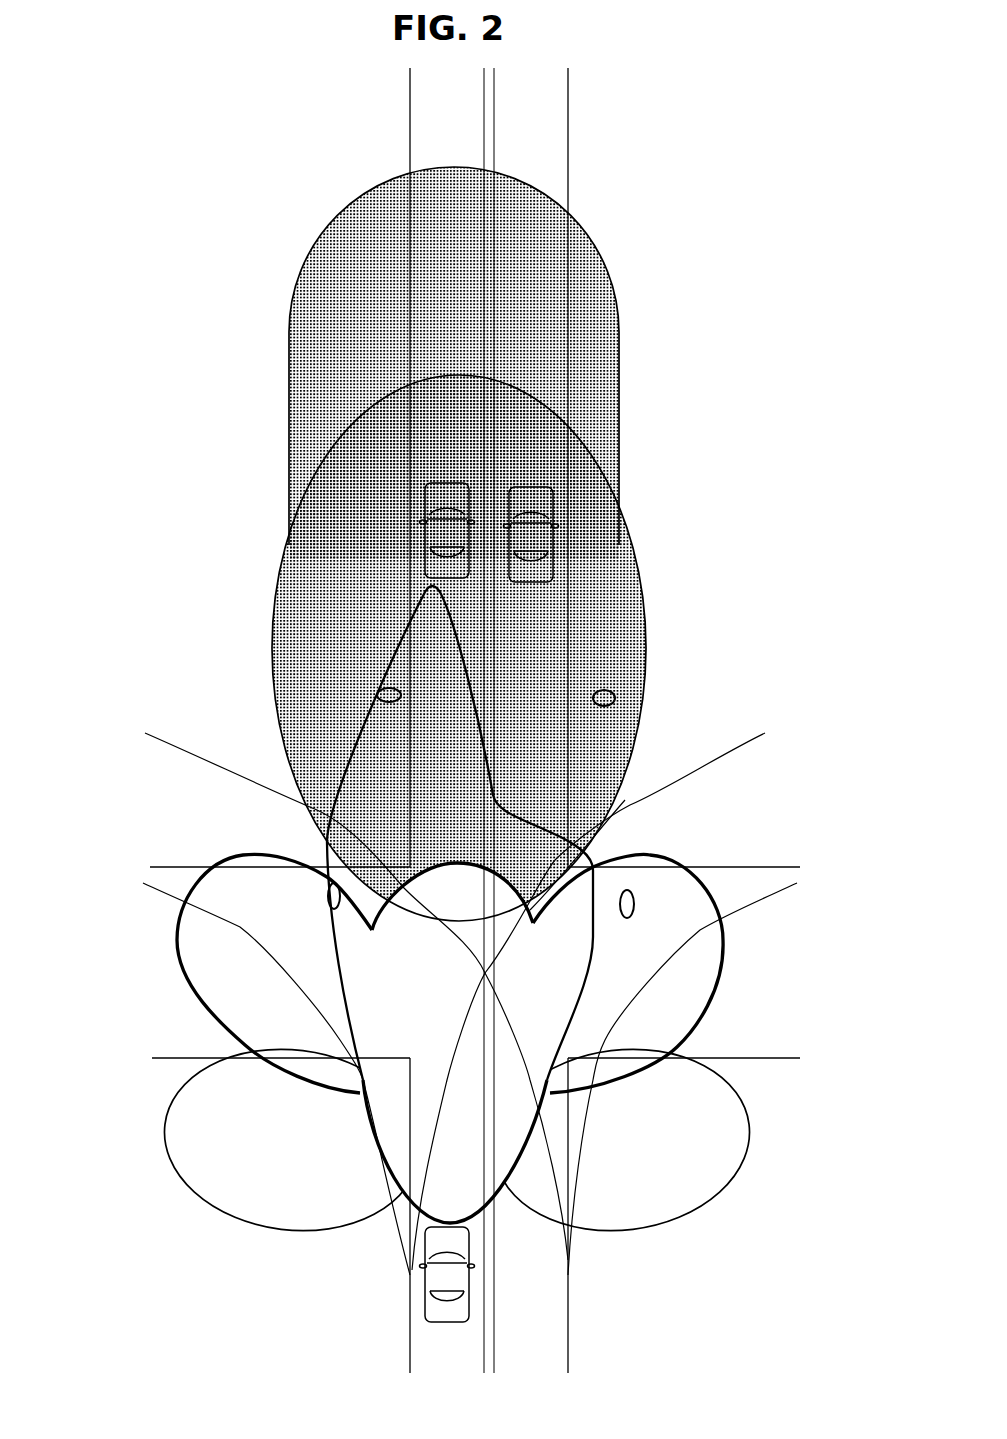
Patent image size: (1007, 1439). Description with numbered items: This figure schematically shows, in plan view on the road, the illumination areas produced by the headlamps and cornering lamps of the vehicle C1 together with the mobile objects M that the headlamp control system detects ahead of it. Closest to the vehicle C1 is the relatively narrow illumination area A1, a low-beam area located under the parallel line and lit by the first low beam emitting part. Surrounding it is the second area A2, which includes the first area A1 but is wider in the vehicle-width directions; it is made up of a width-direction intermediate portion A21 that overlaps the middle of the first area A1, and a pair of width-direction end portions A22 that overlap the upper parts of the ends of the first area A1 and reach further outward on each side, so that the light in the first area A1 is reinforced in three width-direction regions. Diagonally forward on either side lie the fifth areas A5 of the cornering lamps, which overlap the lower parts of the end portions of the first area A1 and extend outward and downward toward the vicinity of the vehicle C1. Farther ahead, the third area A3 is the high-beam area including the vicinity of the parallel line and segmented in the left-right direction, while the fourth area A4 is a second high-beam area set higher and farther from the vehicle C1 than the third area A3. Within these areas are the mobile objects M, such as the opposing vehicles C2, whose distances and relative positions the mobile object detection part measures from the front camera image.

The illumination area (first area) A1 is at (355, 738).
The illumination area (second area) A2 is at (452, 946).
The width-direction intermediate portion A21 is at (592, 852).
The width-direction end portions A22 is at (707, 988).
The illumination area (third area) A3 is at (648, 615).
The illumination area (fourth area) A4 is at (617, 347).
The illumination areas (fifth areas) A5 is at (180, 1126).
The vehicle C1 is at (426, 1276).
The opposing vehicles C2 is at (422, 520).
The mobile objects M is at (386, 690).